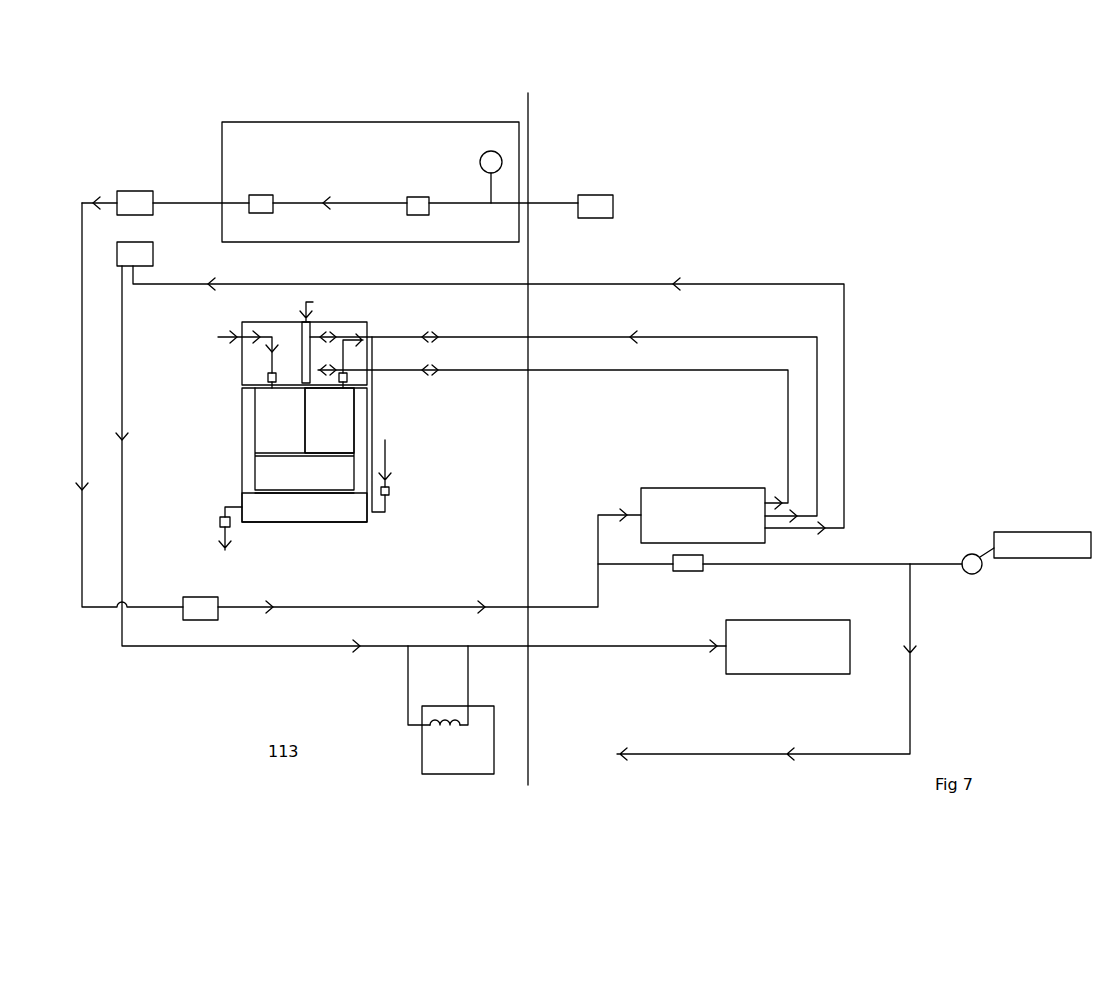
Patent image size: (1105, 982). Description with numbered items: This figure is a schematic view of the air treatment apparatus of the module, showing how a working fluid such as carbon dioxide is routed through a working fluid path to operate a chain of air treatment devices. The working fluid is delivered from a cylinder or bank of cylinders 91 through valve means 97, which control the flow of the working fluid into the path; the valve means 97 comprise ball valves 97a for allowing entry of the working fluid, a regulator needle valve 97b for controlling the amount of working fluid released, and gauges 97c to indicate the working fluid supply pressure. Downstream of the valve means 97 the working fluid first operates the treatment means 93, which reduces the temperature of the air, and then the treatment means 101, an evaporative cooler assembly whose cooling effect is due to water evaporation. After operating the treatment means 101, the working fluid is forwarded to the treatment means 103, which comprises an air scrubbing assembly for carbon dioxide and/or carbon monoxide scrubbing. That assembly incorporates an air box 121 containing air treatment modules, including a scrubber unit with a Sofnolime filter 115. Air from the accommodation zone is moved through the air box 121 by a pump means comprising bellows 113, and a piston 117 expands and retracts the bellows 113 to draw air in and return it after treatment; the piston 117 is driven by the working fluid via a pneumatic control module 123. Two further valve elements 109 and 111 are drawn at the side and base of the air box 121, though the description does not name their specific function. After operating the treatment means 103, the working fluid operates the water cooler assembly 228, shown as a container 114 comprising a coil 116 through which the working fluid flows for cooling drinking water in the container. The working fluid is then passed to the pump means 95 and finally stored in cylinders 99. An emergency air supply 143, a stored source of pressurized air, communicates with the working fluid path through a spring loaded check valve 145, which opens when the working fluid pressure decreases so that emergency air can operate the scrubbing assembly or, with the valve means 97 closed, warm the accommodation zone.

The cylinders 91 is at (613, 195).
The treatment means 93 is at (128, 191).
The pump means 95 is at (153, 251).
The valve means 97 is at (280, 122).
The ball valves 97a is at (412, 197).
The regulator needle valve 97b is at (262, 195).
The gauges 97c is at (481, 166).
The cylinders 99 is at (802, 676).
The treatment means 101 is at (200, 622).
The treatment means 103 is at (779, 284).
The outlet valve 109 is at (390, 505).
The drain valve 111 is at (224, 505).
The bellows 113 is at (272, 437).
The container 114 is at (421, 745).
The Sofnolime filter 115 is at (320, 473).
The coil 116 is at (452, 733).
The piston 117 is at (312, 332).
The air box 121 is at (345, 515).
The pneumatic control module 123 is at (728, 488).
The emergency air supply 143 is at (1050, 531).
The spring loaded check valve 145 is at (965, 557).
The water cooler assembly 228 is at (508, 680).